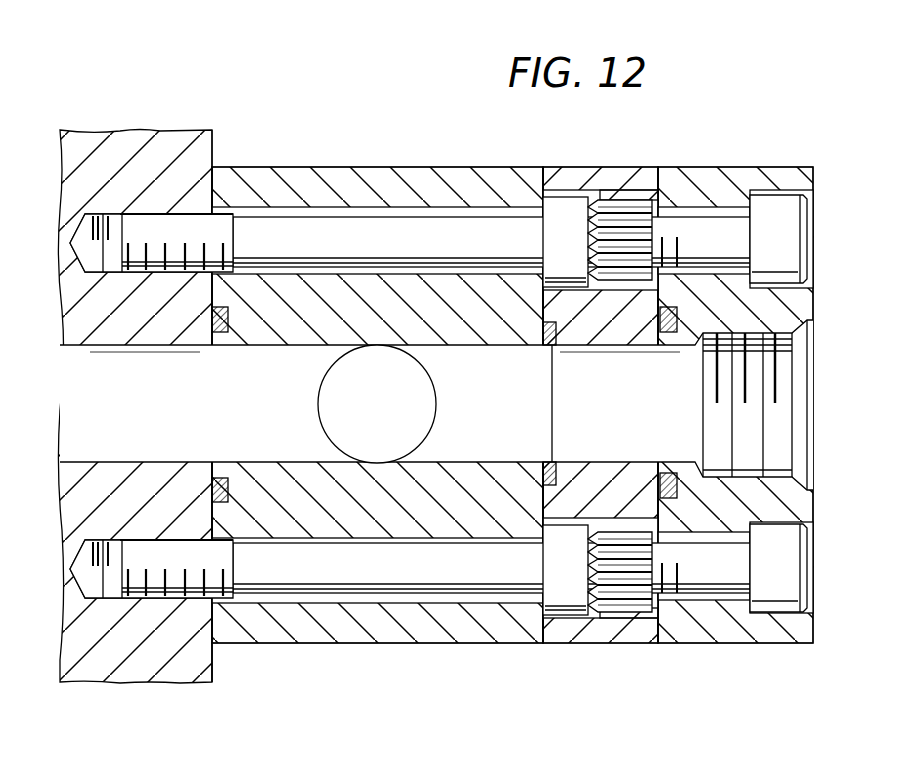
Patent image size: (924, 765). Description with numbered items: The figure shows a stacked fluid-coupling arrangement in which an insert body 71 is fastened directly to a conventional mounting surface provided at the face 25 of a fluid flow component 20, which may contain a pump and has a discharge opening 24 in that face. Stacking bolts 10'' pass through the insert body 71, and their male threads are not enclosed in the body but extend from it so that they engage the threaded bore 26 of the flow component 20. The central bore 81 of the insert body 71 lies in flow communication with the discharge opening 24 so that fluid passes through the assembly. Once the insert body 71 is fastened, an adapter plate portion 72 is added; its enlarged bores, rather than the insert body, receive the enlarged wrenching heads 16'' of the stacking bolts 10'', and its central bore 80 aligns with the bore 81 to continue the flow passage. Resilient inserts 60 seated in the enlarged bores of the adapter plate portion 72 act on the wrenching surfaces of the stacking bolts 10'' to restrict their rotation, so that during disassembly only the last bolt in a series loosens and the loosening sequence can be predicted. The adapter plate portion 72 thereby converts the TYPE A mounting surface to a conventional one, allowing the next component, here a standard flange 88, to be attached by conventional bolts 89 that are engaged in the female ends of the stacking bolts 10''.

The fluid flow component 20 is at (158, 148).
The insert body 71 is at (325, 167).
The stacking bolt 10'' is at (491, 404).
The adapter plate portion 72 is at (602, 168).
The resilient insert 60 is at (618, 190).
The standard flange 88 is at (747, 170).
The conventional bolt 89 is at (797, 218).
The threaded bore 26 is at (127, 220).
The discharge opening 24 is at (105, 348).
The central bore 81 is at (268, 347).
The central bore 80 is at (587, 348).
The face 25 is at (213, 663).
The enlarged wrenching head 16'' is at (584, 445).